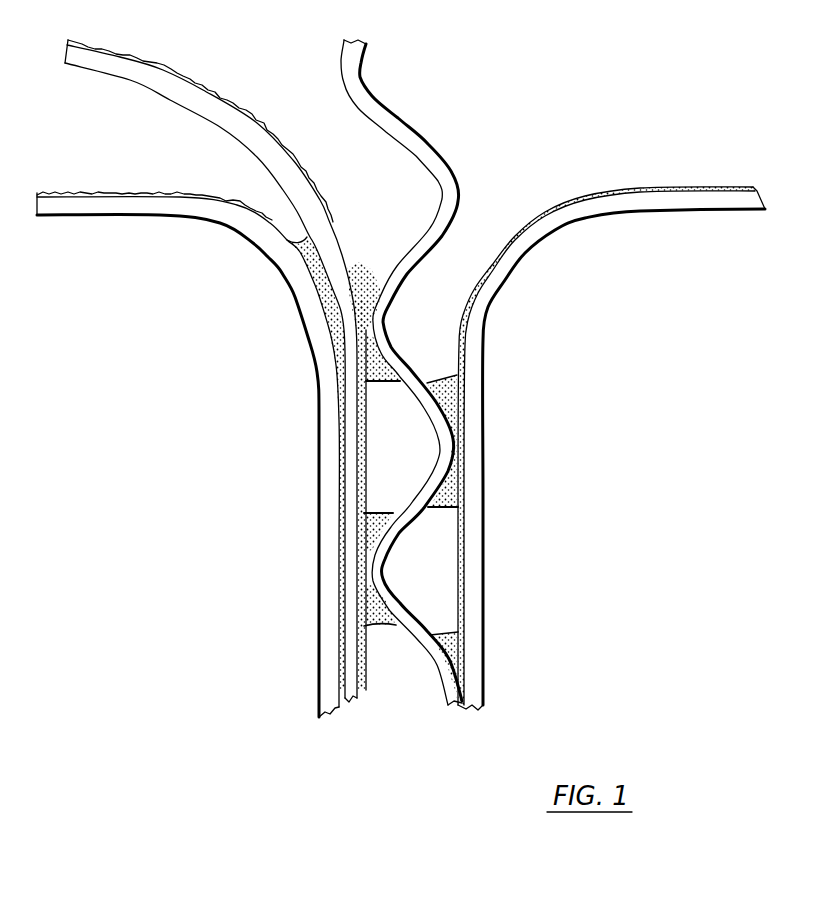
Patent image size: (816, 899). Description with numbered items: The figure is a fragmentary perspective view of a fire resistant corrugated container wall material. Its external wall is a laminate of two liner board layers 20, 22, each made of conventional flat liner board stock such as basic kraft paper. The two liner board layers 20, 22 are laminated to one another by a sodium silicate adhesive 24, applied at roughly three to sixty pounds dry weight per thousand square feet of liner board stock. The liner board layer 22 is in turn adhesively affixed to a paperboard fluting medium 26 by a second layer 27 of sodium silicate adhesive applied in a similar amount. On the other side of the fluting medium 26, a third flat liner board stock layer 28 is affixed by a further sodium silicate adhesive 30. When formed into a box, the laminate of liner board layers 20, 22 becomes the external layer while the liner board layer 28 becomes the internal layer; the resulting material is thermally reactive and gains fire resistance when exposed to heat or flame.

The liner board layer 20 is at (325, 603).
The liner board layer 22 is at (350, 705).
The sodium silicate adhesive 24 is at (308, 248).
The paperboard fluting medium 26 is at (400, 613).
The second layer of sodium silicate adhesive 27 is at (375, 622).
The third flat liner board stock layer 28 is at (482, 665).
The sodium silicate adhesive 30 is at (460, 485).